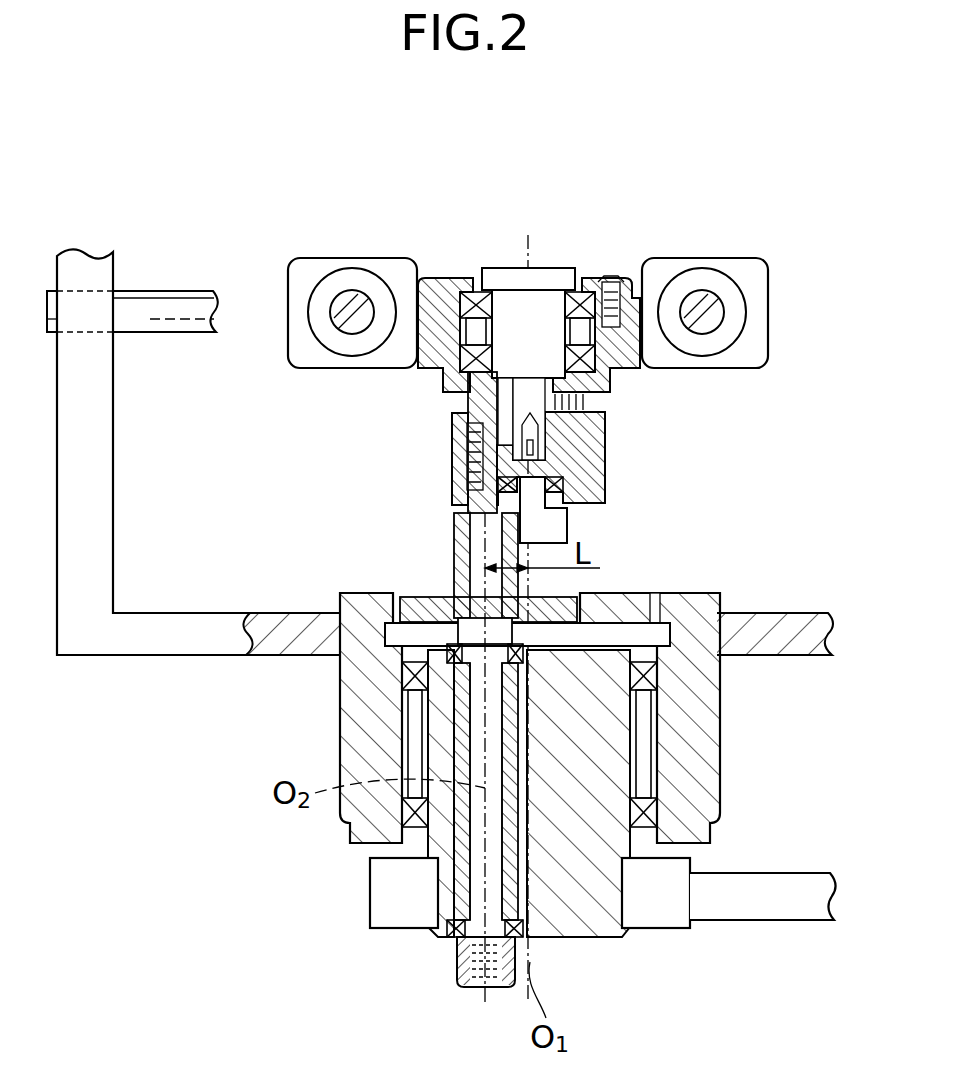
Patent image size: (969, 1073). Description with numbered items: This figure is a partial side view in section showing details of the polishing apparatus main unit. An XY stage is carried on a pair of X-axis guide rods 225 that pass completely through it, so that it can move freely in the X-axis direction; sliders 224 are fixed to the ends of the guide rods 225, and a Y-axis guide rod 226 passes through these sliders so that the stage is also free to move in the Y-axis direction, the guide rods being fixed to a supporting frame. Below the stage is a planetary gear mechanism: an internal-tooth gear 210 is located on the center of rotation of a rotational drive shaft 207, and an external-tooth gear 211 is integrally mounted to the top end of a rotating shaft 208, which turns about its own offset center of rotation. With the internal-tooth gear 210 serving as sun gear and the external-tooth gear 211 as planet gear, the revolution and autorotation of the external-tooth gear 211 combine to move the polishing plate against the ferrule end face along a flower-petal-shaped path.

The rotational drive shaft 207 is at (602, 913).
The rotating shaft 208 is at (478, 872).
The internal-tooth gear 210 is at (650, 616).
The external-tooth gear 211 is at (582, 603).
The slider 224 is at (352, 380).
The X-axis guide rod 225 is at (338, 324).
The Y-axis guide rod 226 is at (159, 334).